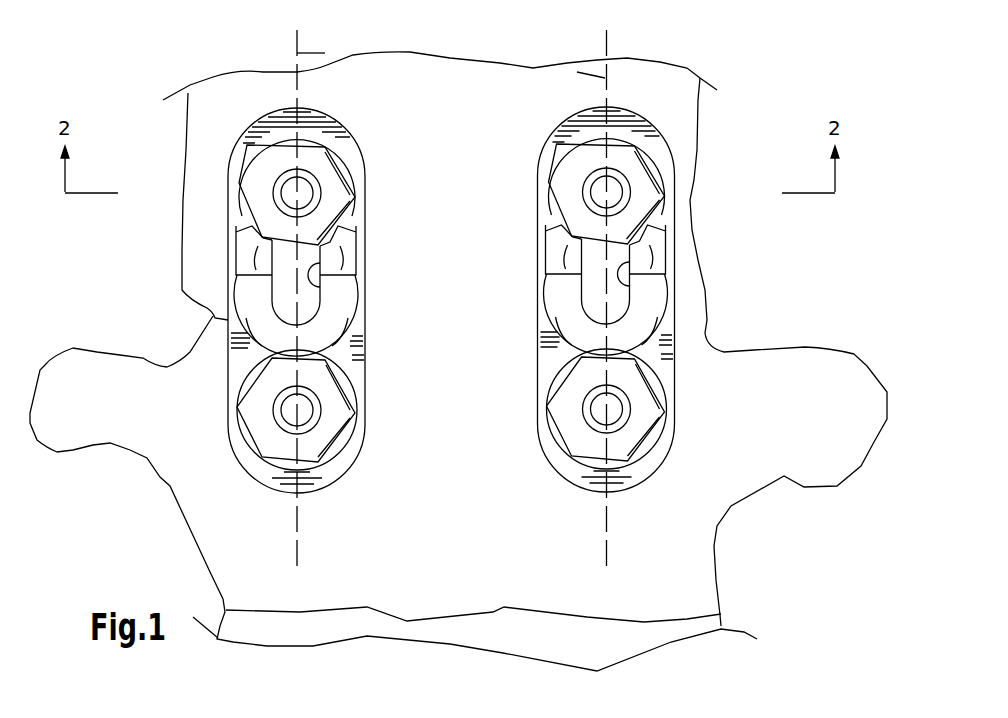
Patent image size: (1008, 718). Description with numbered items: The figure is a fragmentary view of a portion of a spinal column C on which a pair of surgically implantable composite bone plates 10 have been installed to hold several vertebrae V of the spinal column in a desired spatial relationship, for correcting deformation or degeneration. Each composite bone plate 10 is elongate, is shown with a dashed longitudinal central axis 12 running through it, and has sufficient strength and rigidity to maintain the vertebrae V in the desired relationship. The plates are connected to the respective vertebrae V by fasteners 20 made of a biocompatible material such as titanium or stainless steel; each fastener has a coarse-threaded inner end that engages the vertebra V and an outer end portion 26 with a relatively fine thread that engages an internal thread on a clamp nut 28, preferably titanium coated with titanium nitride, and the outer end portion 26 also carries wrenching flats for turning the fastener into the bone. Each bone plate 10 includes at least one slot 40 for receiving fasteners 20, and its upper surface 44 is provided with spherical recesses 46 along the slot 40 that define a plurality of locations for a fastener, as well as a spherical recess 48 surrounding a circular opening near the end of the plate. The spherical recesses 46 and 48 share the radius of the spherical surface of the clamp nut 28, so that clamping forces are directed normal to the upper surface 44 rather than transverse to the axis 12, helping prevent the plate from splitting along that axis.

The composite bone plate 10 is at (289, 120).
The longitudinal central axis 12 is at (332, 52).
The fastener 20 is at (317, 173).
The outer end portion 26 is at (293, 193).
The clamp nut 28 is at (257, 182).
The slot 40 is at (313, 264).
The upper surface 44 is at (350, 352).
The spherical recess 46 is at (247, 295).
The spherical recess 48 is at (250, 377).
The vertebra V is at (677, 87).
The spinal column C is at (282, 631).